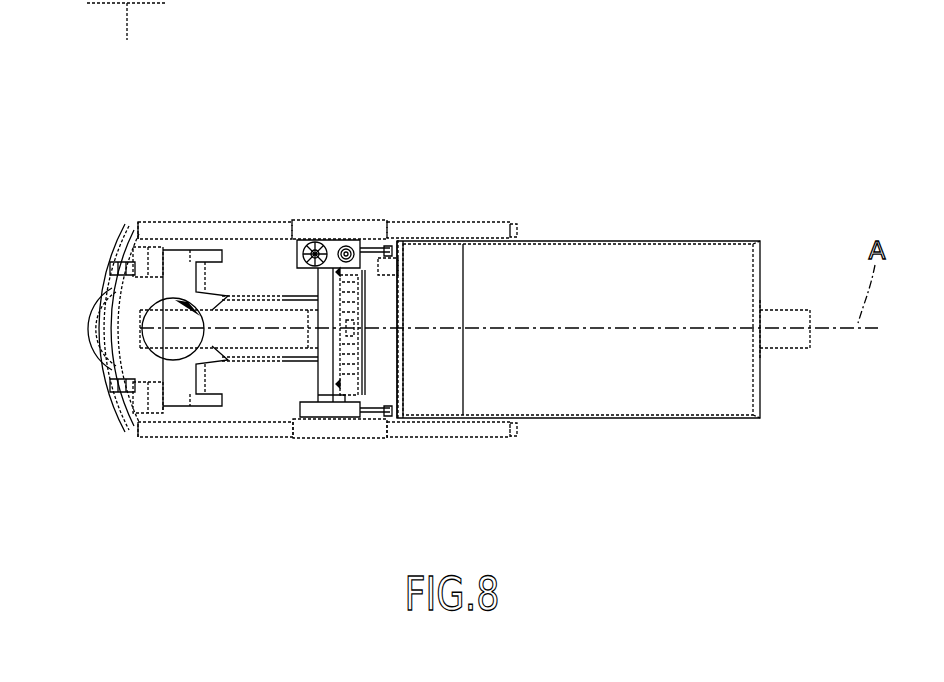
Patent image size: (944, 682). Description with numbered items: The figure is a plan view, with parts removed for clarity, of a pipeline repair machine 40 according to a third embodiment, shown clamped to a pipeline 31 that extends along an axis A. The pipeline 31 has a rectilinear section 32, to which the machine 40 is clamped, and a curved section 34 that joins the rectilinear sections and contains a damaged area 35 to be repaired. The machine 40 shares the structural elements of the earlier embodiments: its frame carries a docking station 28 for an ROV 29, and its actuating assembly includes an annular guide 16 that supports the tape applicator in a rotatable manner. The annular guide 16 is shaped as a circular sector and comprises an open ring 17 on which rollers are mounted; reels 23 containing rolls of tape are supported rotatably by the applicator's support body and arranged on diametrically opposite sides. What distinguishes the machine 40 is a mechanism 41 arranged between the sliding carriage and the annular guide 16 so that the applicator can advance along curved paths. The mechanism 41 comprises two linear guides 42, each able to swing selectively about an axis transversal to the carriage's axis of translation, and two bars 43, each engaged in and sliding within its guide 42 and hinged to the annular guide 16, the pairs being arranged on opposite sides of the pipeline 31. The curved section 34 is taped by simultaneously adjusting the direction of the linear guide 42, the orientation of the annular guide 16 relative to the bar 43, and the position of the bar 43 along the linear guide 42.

The annular guide 16 is at (100, 372).
The open ring 17 is at (175, 375).
The reels 23 is at (120, 262).
The docking station 28 is at (405, 375).
The ROV 29 is at (611, 223).
The pipeline 31 is at (800, 378).
The rectilinear section 32 is at (780, 318).
The curved section 34 is at (262, 315).
The damaged area 35 is at (188, 312).
The machine 40 is at (543, 82).
The mechanism 41 is at (318, 180).
The linear guide 42 is at (370, 226).
The bar 43 is at (486, 228).